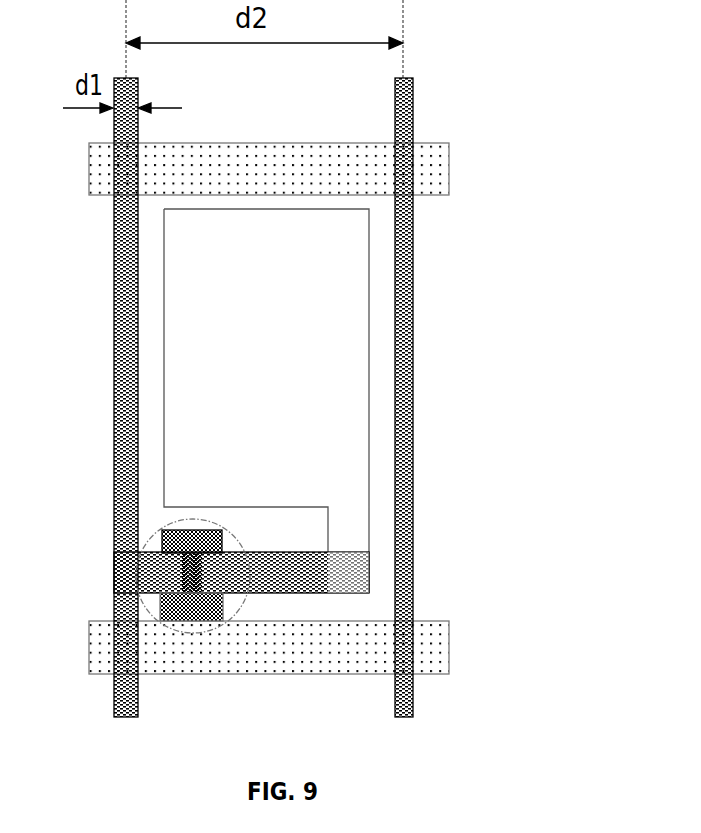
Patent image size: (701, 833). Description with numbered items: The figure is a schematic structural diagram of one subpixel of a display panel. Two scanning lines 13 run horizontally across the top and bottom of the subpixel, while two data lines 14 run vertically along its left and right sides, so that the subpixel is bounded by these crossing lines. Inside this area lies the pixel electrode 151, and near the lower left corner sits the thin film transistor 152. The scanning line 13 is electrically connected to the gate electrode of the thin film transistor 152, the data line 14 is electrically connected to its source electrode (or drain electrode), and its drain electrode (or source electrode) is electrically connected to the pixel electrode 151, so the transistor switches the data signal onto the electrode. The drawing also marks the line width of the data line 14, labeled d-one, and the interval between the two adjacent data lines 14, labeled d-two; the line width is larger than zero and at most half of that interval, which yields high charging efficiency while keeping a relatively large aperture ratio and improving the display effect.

The scanning line 13 is at (428, 168).
The data line 14 is at (113, 365).
The pixel electrode 151 is at (355, 314).
The thin film transistor 152 is at (162, 540).